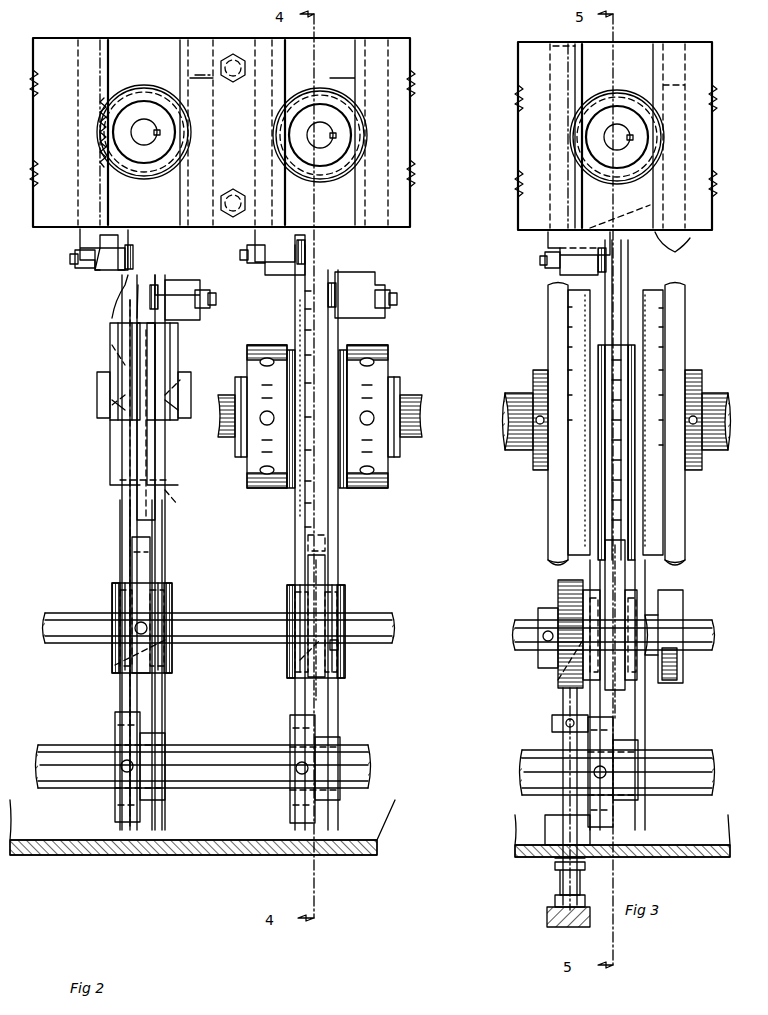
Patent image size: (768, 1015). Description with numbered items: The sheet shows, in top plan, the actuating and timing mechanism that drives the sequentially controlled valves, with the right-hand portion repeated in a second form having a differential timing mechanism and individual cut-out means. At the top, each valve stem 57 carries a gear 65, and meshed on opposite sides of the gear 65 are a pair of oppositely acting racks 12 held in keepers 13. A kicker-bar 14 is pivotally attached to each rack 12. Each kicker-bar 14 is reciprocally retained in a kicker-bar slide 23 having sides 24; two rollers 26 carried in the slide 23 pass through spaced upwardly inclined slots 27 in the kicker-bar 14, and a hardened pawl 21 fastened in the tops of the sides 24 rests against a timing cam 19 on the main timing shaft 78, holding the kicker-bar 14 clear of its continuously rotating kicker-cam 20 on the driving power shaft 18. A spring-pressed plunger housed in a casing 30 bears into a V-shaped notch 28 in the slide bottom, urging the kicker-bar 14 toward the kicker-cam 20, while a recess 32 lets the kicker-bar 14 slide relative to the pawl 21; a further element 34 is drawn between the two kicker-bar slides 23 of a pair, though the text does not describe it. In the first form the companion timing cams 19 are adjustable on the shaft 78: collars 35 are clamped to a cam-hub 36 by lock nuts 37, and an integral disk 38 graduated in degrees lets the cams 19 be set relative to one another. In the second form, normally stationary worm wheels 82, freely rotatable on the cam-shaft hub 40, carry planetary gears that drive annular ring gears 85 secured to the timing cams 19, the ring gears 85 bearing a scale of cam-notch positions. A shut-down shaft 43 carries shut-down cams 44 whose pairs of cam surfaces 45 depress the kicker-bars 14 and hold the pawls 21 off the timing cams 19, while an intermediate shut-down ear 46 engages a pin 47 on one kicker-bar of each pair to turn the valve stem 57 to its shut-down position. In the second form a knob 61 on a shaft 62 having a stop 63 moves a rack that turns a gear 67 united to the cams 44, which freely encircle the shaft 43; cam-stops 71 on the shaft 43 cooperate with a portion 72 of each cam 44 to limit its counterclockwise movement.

In FIG. 2, the rack 12 is at (100, 70).
In FIG. 3, the rack 12 is at (672, 250).
In FIG. 2, the keeper 13 is at (45, 30).
In FIG. 3, the keeper 13 is at (616, 136).
In FIG. 2, the kicker-bar 14 is at (122, 538).
In FIG. 3, the kicker-bar 14 is at (590, 575).
In FIG. 2, the driving power shaft 18 is at (212, 745).
In FIG. 3, the driving power shaft 18 is at (617, 758).
In FIG. 2, the timing cam 19 is at (300, 530).
In FIG. 3, the timing cam 19 is at (560, 530).
In FIG. 2, the kicker-cam 20 is at (140, 808).
In FIG. 3, the kicker-cam 20 is at (635, 812).
In FIG. 2, the pawl 21 is at (130, 420).
In FIG. 2, the kicker-bar slide 23 is at (180, 332).
In FIG. 2, the side 24 is at (115, 305).
In FIG. 2, the roller 26 is at (112, 340).
In FIG. 2, the inclined slot 27 is at (175, 360).
In FIG. 2, the V-shaped notch 28 is at (165, 395).
In FIG. 2, the casing 30 is at (180, 405).
In FIG. 2, the recess 32 is at (115, 425).
In FIG. 2, the center plate 34 is at (138, 440).
In FIG. 2, the collar 35 is at (260, 345).
In FIG. 2, the cam-hub 36 is at (400, 382).
In FIG. 2, the lock nut 37 is at (290, 410).
In FIG. 2, the disk 38 is at (330, 338).
In FIG. 3, the disk 38 is at (616, 400).
In FIG. 3, the cam-shaft hub 40 is at (533, 470).
In FIG. 2, the shut-down shaft 43 is at (213, 612).
In FIG. 3, the shut-down shaft 43 is at (515, 632).
In FIG. 2, the shut-down cam 44 is at (345, 662).
In FIG. 2, the cam surface 45 is at (120, 670).
In FIG. 3, the cam surface 45 is at (640, 595).
In FIG. 2, the shut-down ear 46 is at (150, 568).
In FIG. 3, the shut-down ear 46 is at (625, 570).
In FIG. 2, the pin 47 is at (112, 660).
In FIG. 3, the pin 47 is at (555, 665).
In FIG. 2, the valve stem 57 is at (148, 125).
In FIG. 3, the valve stem 57 is at (622, 130).
In FIG. 3, the knob 61 is at (550, 918).
In FIG. 3, the shaft 62 is at (563, 803).
In FIG. 3, the stop 63 is at (552, 728).
In FIG. 2, the gear 65 is at (131, 85).
In FIG. 3, the gear 65 is at (640, 103).
In FIG. 3, the gear 67 is at (560, 700).
In FIG. 3, the cam-stop 71 is at (658, 672).
In FIG. 3, the portion of shut-down cam 72 is at (675, 620).
In FIG. 2, the main timing shaft 78 is at (220, 420).
In FIG. 3, the main timing shaft 78 is at (505, 418).
In FIG. 3, the worm wheel 82 is at (553, 318).
In FIG. 3, the annular ring gear 85 is at (660, 320).